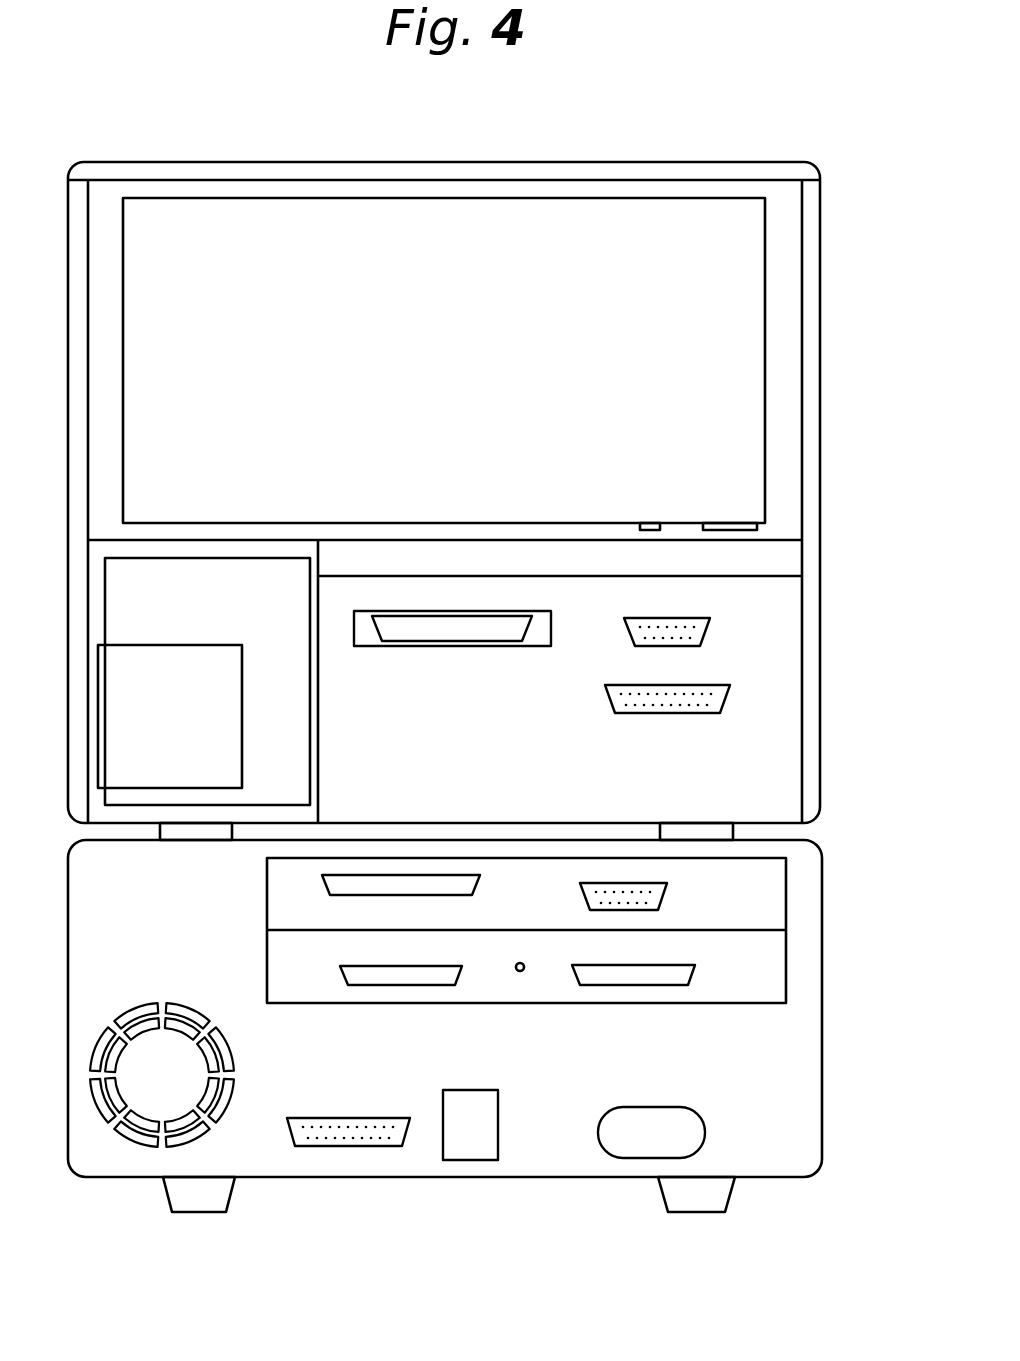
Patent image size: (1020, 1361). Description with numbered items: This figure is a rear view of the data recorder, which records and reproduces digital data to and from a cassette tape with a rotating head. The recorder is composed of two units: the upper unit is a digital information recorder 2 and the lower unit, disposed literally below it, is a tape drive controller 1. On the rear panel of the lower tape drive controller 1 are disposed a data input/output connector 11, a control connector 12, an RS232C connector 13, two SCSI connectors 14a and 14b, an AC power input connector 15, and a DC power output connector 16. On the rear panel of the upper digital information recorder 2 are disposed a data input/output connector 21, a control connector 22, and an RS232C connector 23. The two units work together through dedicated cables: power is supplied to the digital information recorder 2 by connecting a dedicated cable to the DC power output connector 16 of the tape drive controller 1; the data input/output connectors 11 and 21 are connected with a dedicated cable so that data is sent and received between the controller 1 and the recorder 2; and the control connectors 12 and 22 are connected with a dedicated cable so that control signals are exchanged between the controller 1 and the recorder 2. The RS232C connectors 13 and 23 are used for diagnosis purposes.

The tape drive controller 1 is at (250, 1178).
The digital information recorder 2 is at (417, 162).
The data input/output connector 11 is at (325, 884).
The control connector 12 is at (665, 900).
The RS232C connector 13 is at (353, 1147).
The SCSI connector 14a is at (340, 978).
The SCSI connector 14b is at (693, 976).
The AC power input connector 15 is at (634, 1159).
The DC power output connector 16 is at (473, 1161).
The data input/output connector 21 is at (372, 642).
The control connector 22 is at (710, 631).
The RS232C connector 23 is at (726, 712).